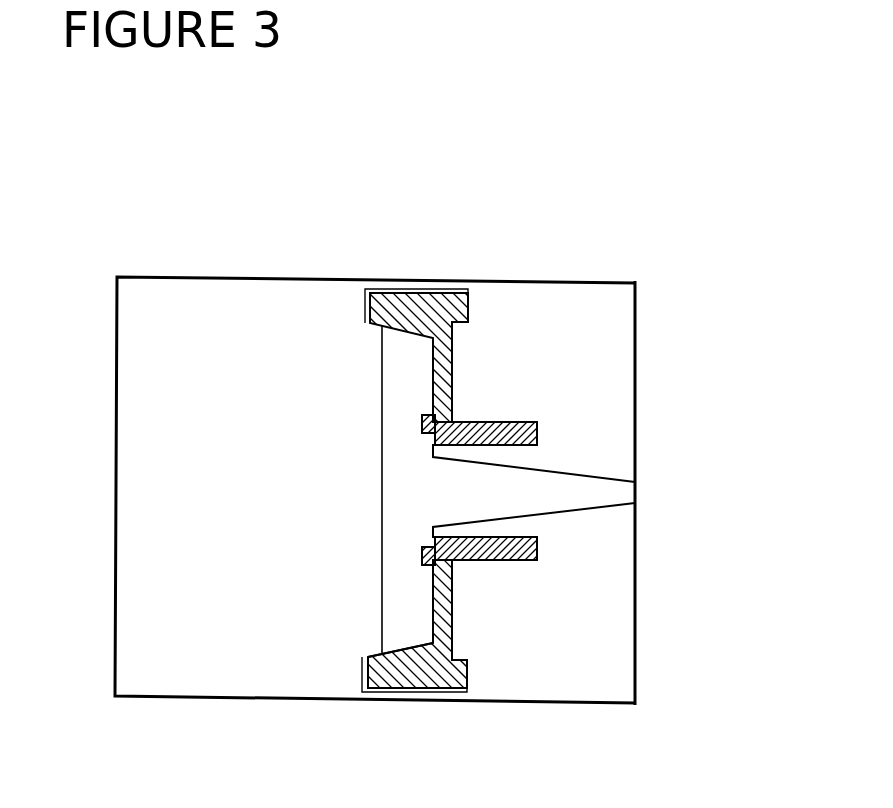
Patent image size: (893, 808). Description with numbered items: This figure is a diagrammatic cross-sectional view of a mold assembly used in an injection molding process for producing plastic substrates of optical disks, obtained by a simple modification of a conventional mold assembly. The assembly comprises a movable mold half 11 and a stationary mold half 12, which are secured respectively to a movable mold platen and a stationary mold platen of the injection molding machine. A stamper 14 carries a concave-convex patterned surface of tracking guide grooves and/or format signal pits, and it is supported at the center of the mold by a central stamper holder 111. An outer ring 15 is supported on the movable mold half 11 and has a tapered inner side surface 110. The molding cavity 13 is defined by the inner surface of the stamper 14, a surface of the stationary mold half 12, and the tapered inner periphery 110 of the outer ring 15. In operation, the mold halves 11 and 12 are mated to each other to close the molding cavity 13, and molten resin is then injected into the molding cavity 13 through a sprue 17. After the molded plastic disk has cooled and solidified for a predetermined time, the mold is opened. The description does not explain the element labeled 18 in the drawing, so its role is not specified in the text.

The movable mold half 11 is at (217, 662).
The stationary mold half 12 is at (613, 360).
The molding cavity 13 is at (400, 378).
The stamper 14 is at (452, 387).
The outer ring 15 is at (412, 685).
The sprue 17 is at (595, 488).
The thin conductive film 18 is at (365, 675).
The tapered inner side surface 110 is at (403, 648).
The central stamper holder 111 is at (537, 435).